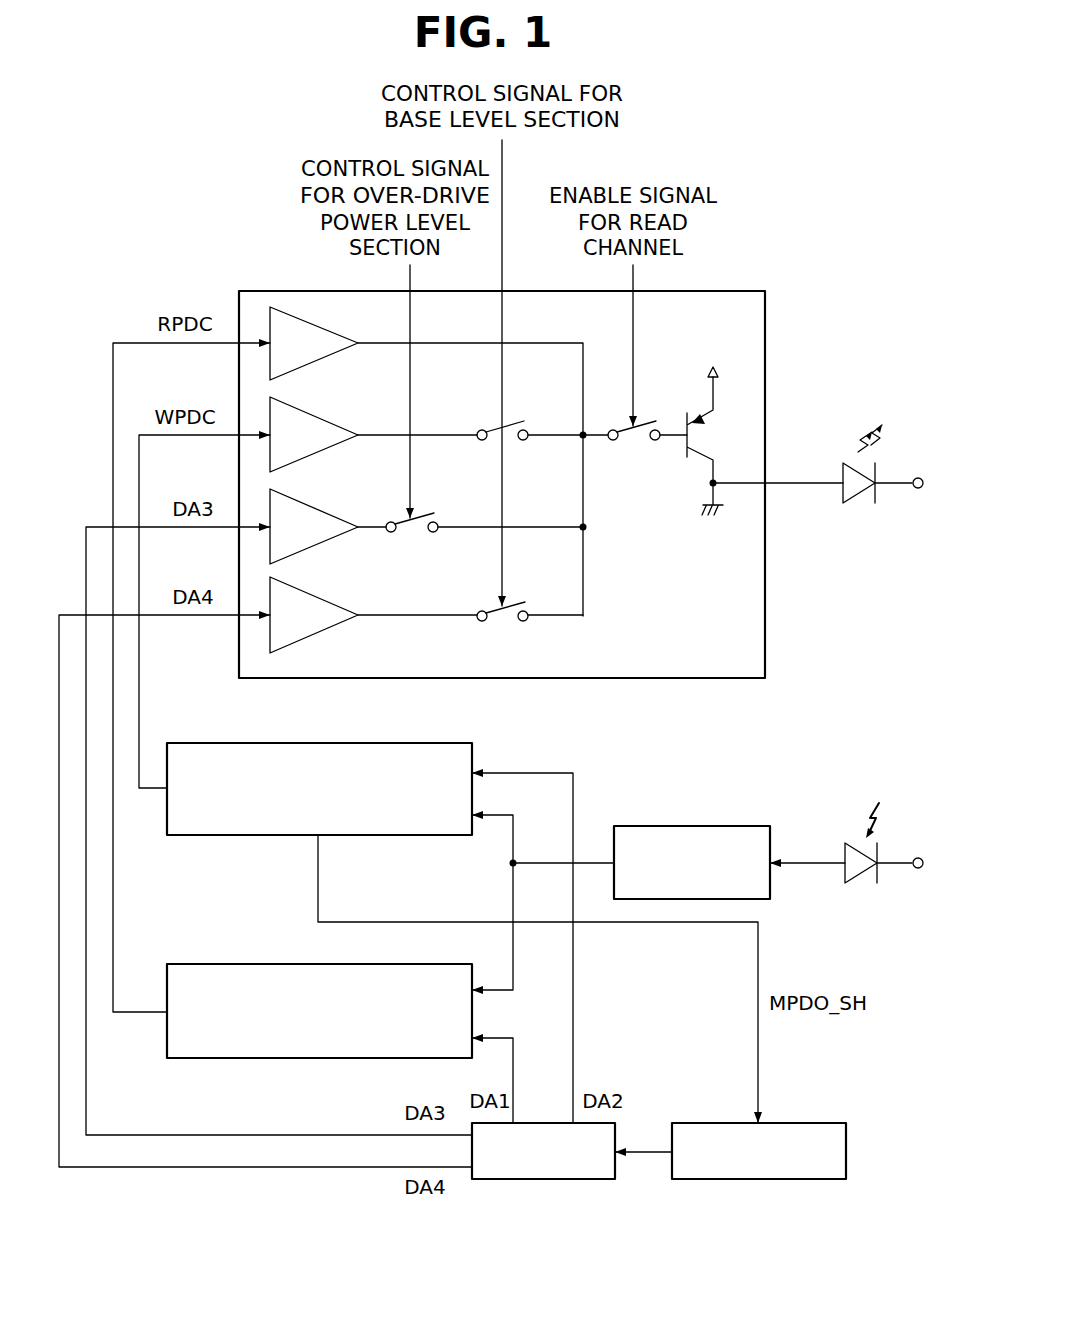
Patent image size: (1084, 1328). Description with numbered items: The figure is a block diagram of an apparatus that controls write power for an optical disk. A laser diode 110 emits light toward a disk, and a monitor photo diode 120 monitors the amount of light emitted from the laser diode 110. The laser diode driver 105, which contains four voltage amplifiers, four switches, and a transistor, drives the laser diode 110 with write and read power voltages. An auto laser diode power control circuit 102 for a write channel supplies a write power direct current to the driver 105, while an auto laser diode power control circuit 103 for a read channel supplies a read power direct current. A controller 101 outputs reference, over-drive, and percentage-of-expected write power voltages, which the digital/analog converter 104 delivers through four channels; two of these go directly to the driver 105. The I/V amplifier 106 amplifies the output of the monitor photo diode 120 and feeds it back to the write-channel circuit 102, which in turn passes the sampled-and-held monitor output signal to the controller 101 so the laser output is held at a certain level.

The controller 101 is at (758, 1180).
The auto laser diode power control circuit for a write channel 102 is at (377, 742).
The auto laser diode power control circuit for a read channel 103 is at (377, 963).
The digital/analog converter 104 is at (543, 1180).
The laser diode driver 105 is at (700, 291).
The I/V amplifier 106 is at (703, 826).
The laser diode 110 is at (818, 502).
The monitor photo diode 120 is at (846, 880).